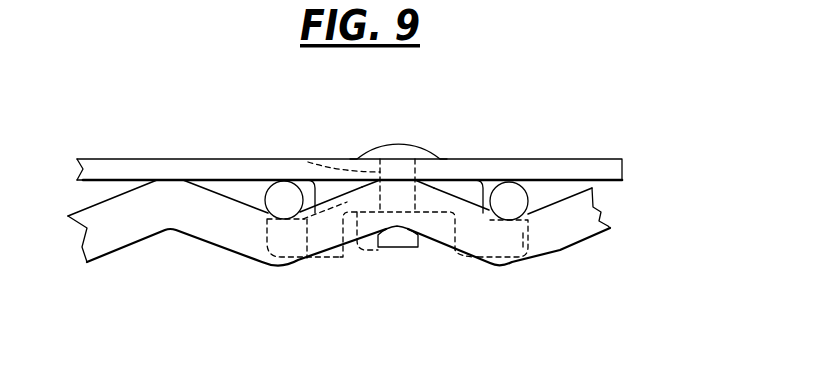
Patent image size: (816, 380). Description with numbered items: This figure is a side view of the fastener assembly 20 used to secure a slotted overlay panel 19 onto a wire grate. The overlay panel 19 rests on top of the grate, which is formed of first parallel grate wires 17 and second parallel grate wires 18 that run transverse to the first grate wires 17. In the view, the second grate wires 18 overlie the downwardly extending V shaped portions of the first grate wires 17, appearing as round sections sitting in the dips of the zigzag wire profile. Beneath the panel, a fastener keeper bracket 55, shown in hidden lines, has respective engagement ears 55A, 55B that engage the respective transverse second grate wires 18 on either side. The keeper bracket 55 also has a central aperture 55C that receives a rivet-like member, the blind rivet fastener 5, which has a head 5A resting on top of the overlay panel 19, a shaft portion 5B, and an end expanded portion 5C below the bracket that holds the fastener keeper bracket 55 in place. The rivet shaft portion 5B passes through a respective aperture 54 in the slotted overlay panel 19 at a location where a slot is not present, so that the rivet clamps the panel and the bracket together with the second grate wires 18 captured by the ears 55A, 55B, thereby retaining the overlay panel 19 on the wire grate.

The slotted overlay panel 19 is at (95, 158).
The first parallel grate wires 17 is at (575, 220).
The second parallel grate wires 18 is at (283, 196).
The fastener assembly 20 is at (416, 198).
The aperture 54 is at (308, 162).
The blind rivet fastener 5 is at (360, 206).
The head 5A is at (386, 146).
The shaft portion 5B is at (307, 258).
The end expanded portion 5C is at (398, 234).
The fastener keeper bracket 55 is at (405, 264).
The engagement ear 55A is at (261, 258).
The engagement ear 55B is at (537, 235).
The central aperture 55C is at (358, 240).